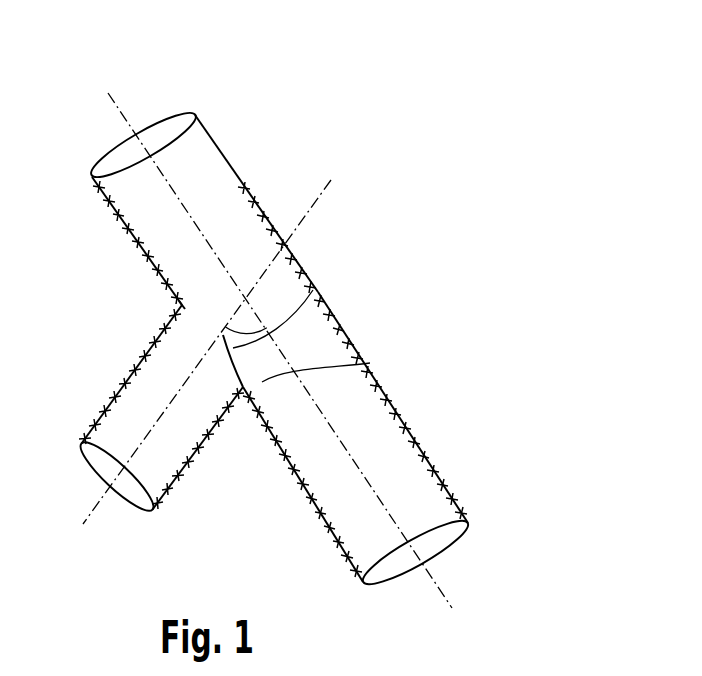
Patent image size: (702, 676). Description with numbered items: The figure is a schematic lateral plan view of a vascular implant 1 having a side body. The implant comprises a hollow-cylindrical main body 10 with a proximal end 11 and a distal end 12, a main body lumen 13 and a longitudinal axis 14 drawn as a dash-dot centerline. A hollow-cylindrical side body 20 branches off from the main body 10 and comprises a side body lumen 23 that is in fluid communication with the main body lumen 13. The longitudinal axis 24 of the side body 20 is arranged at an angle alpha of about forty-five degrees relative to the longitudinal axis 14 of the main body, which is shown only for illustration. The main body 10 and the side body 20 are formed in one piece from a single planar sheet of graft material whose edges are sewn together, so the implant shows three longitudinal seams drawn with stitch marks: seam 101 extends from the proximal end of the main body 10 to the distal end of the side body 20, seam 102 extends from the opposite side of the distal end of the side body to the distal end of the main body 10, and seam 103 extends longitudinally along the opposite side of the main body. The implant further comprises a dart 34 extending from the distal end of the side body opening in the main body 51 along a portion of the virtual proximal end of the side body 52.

The vascular implant 1 is at (432, 175).
The main body 10 is at (408, 422).
The proximal end 11 is at (170, 95).
The distal end 12 is at (480, 545).
The main body lumen 13 is at (218, 175).
The longitudinal axis 14 is at (447, 600).
The side body 20 is at (125, 418).
The side body lumen 23 is at (165, 462).
The longitudinal axis 24 is at (83, 523).
The dart 34 is at (320, 290).
The side body opening in the main body 51 is at (373, 363).
The virtual proximal end of the side body 52 is at (182, 308).
The longitudinal seam 101 is at (127, 228).
The longitudinal seam 102 is at (320, 520).
The longitudinal seam 103 is at (350, 318).